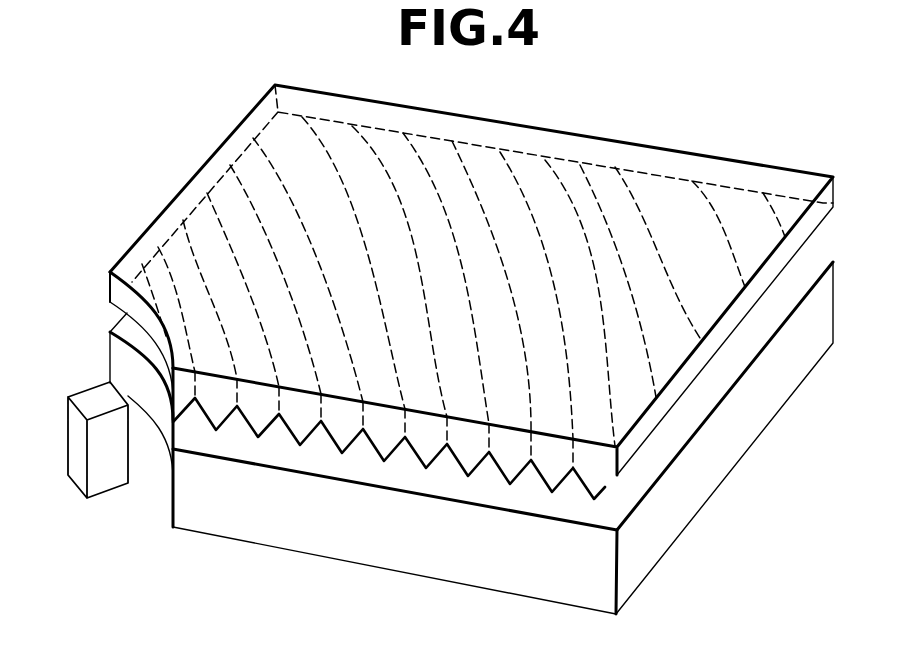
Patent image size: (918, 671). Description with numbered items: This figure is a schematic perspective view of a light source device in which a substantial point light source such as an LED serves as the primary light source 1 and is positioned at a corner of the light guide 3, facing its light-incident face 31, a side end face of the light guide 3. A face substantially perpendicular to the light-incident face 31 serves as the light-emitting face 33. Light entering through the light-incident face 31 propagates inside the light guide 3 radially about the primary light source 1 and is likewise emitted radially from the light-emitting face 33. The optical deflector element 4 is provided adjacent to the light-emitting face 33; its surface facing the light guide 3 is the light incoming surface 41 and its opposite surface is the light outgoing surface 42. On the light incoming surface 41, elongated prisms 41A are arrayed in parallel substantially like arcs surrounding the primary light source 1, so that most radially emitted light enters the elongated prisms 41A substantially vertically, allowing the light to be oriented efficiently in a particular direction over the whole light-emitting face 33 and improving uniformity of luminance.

The primary light source 1 is at (98, 478).
The light guide 3 is at (471, 452).
The light-incident face 31 is at (160, 410).
The light-emitting face 33 is at (502, 495).
The optical deflector element 4 is at (745, 161).
The light incoming surface 41 is at (454, 486).
The elongated prisms 41A is at (428, 452).
The light outgoing surface 42 is at (442, 122).